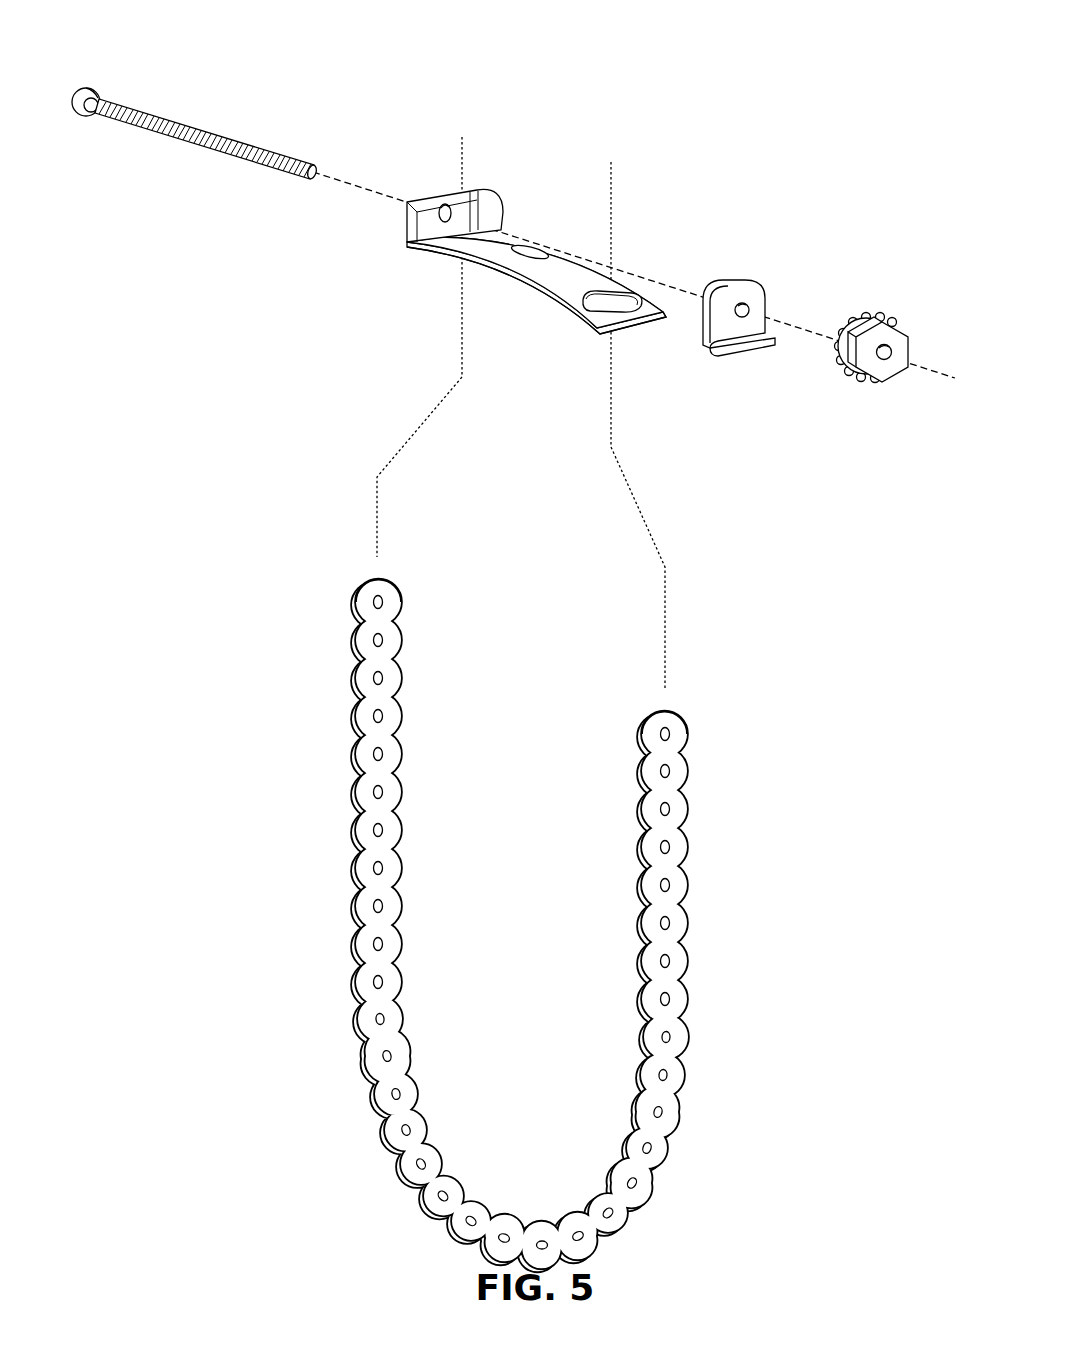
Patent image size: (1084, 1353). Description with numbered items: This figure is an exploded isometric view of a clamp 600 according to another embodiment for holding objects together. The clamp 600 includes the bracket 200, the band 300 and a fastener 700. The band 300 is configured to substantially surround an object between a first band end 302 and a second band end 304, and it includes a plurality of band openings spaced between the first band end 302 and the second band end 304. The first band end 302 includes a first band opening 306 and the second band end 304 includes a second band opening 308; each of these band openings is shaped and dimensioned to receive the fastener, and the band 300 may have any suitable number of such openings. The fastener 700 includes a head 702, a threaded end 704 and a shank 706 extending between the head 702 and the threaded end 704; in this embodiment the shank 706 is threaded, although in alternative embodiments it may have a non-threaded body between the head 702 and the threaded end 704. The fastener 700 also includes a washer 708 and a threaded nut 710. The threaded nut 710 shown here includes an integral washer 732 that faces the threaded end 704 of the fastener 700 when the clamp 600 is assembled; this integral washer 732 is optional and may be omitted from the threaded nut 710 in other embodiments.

The fastener 700 is at (717, 270).
The clamp 600 is at (182, 72).
The head 702 is at (83, 120).
The threaded end 704 is at (312, 166).
The shank 706 is at (217, 124).
The bracket 200 is at (530, 295).
The washer 708 is at (722, 315).
The integral washer 732 is at (735, 351).
The threaded nut 710 is at (898, 334).
The band 300 is at (713, 723).
The first band end 302 is at (378, 582).
The second band end 304 is at (660, 714).
The first band opening 306 is at (372, 679).
The second band opening 308 is at (660, 806).